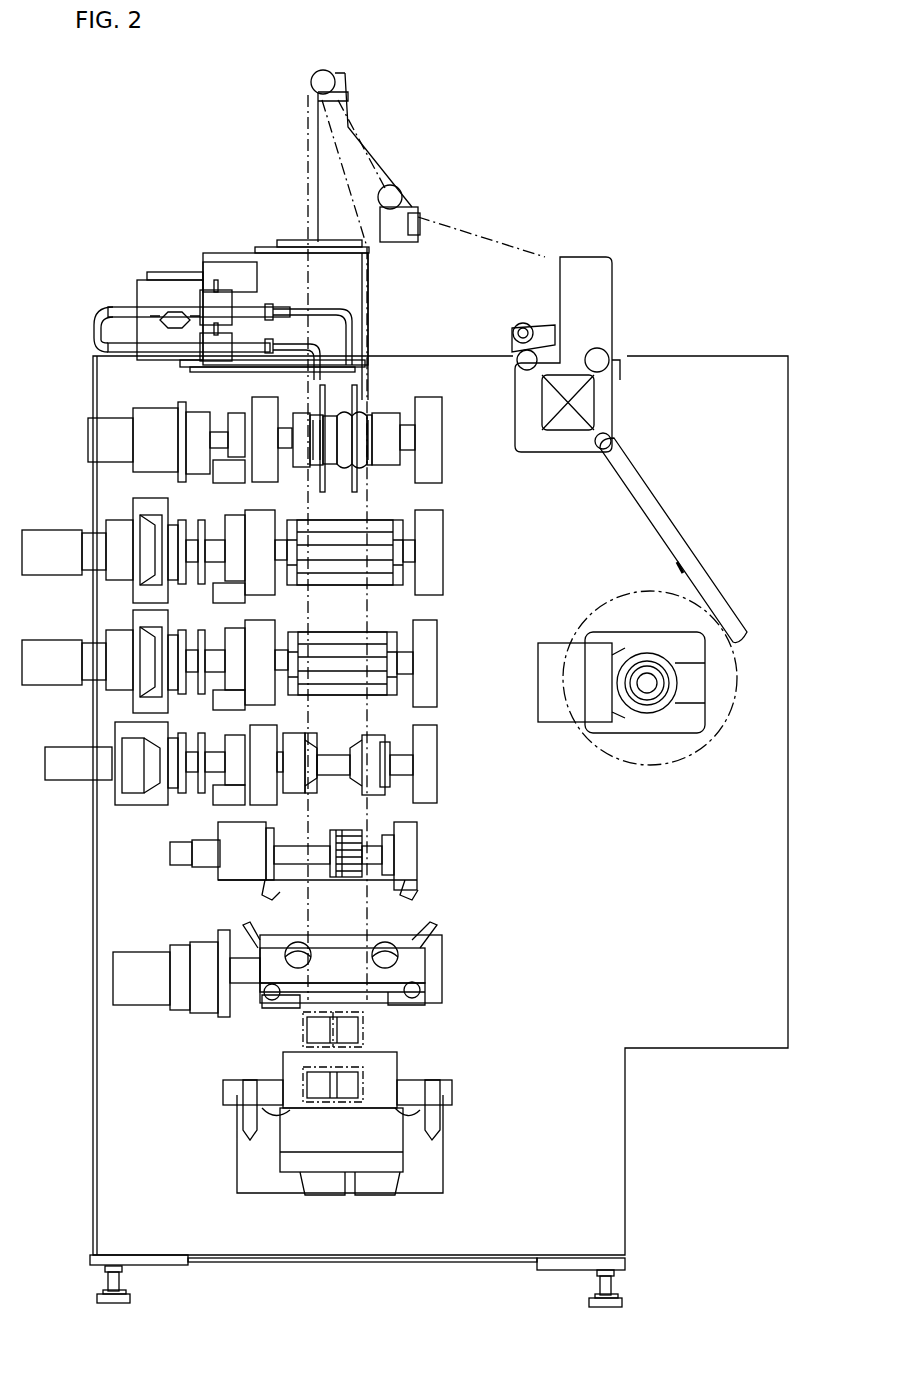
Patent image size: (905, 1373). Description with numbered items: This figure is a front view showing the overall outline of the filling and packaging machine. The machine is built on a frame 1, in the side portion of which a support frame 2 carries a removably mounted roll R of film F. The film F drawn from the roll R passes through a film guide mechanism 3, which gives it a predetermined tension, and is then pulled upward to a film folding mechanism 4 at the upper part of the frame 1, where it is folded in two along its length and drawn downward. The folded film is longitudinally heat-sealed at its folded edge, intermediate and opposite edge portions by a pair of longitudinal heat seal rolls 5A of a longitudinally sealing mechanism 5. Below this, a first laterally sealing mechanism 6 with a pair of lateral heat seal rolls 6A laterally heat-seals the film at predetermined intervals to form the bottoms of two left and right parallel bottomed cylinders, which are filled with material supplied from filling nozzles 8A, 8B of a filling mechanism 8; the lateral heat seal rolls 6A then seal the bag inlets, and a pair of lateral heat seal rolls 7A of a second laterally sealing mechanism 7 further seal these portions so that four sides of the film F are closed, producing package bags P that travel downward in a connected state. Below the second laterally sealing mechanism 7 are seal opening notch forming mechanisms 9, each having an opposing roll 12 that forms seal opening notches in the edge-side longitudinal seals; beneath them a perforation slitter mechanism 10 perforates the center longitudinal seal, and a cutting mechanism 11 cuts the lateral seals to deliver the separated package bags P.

The frame 1 is at (652, 1030).
The support frame 2 is at (645, 690).
The film guide mechanism 3 is at (627, 322).
The film folding mechanism 4 is at (288, 228).
The longitudinally sealing mechanism 5 is at (299, 427).
The longitudinal heat seal rolls 5A is at (368, 418).
The first laterally sealing mechanism 6 is at (269, 550).
The lateral heat seal rolls 6A is at (357, 553).
The second laterally sealing mechanism 7 is at (265, 669).
The lateral heat seal rolls 7A is at (385, 680).
The filling mechanism 8 is at (269, 315).
The filling nozzle 8A is at (350, 316).
The filling nozzle 8B is at (330, 372).
The seal opening notch forming mechanisms 9 is at (320, 797).
The perforation slitter mechanism 10 is at (380, 878).
The cutting mechanism 11 is at (448, 992).
The roll 12 is at (277, 779).
The film F is at (522, 233).
The roll of film R is at (637, 702).
The package bags P is at (355, 1027).